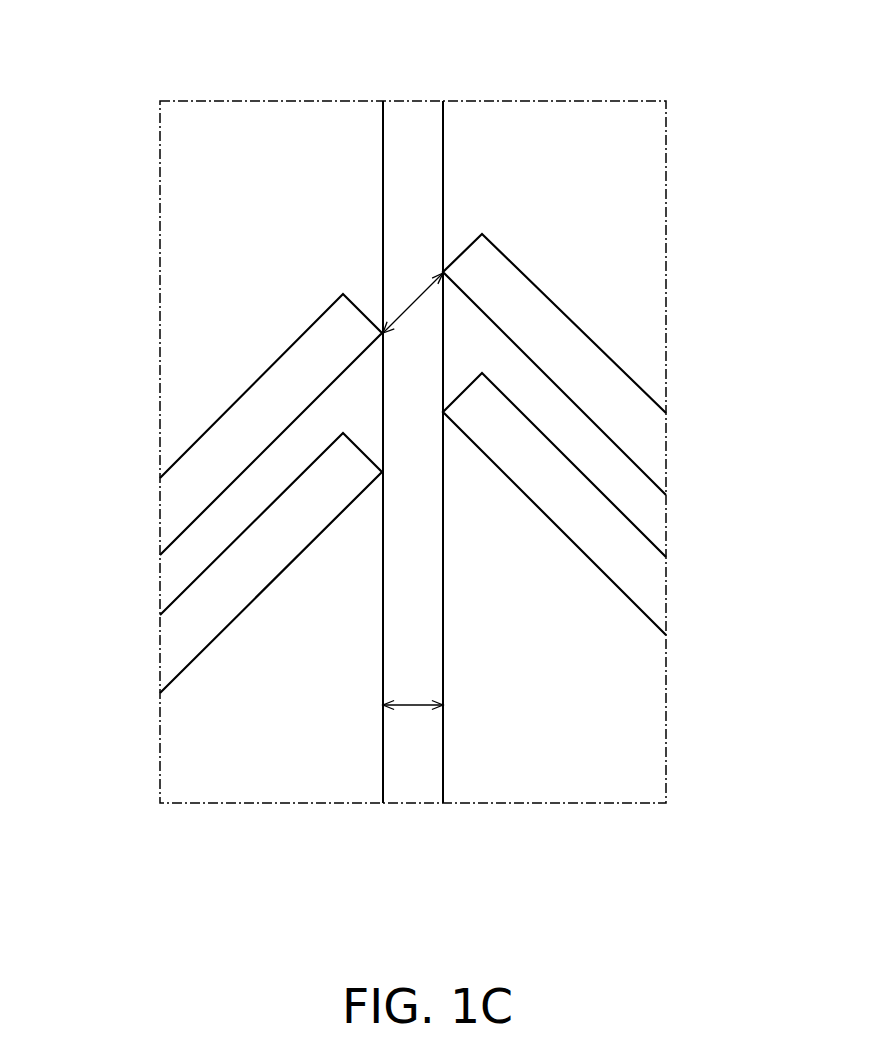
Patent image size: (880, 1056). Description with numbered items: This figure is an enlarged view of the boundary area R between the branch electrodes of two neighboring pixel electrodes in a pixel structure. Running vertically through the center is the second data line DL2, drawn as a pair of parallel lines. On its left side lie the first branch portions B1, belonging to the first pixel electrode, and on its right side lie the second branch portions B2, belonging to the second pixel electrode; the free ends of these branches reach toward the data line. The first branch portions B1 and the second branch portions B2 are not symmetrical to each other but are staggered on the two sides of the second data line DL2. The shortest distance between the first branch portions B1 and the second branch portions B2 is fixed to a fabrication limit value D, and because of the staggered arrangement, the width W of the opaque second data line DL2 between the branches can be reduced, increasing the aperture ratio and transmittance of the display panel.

The boundary area R is at (666, 153).
The second data line DL2 is at (422, 145).
The first branch portions B1 is at (180, 490).
The second branch portions B2 is at (646, 433).
The fabrication limit value D is at (413, 290).
The width of the second data line W is at (413, 682).